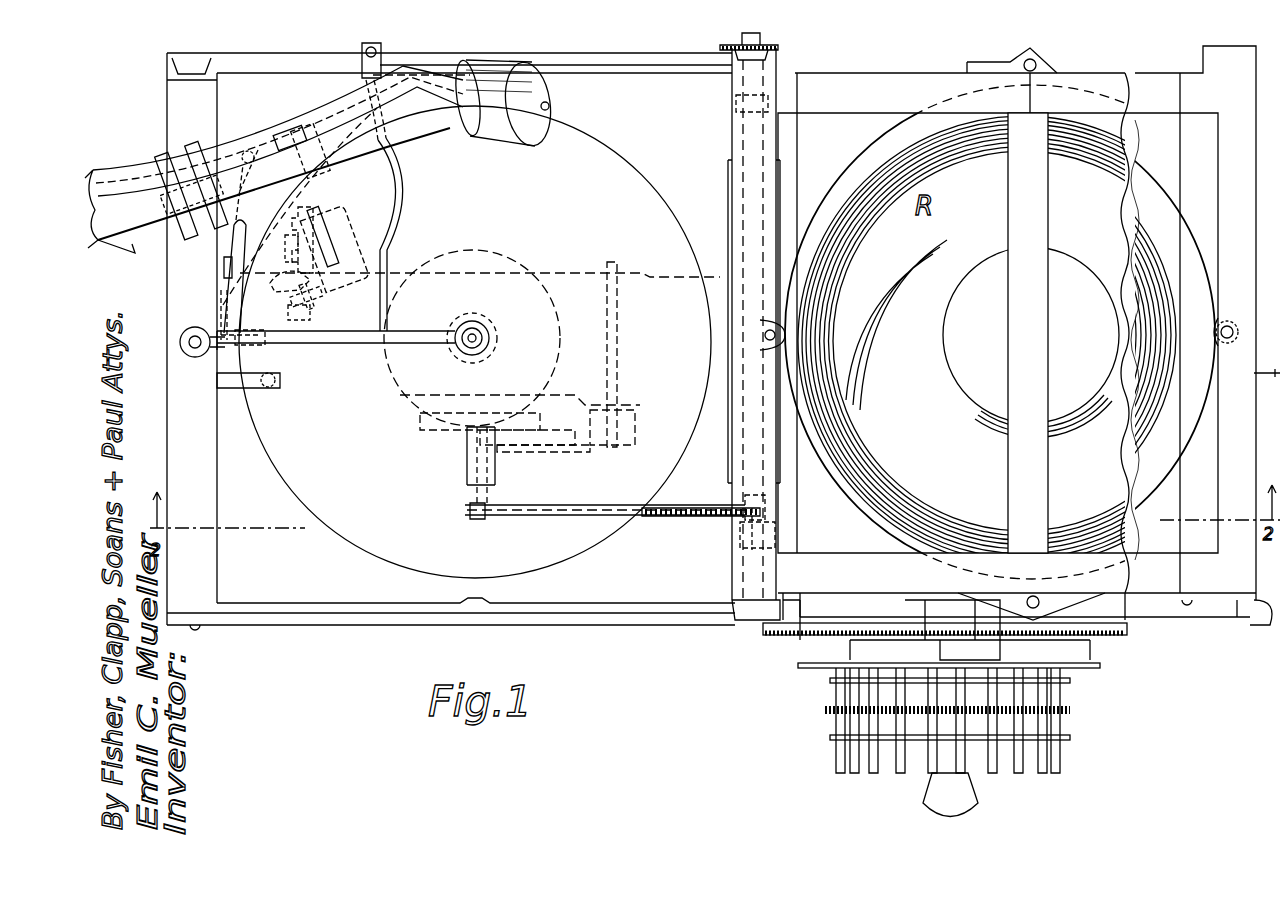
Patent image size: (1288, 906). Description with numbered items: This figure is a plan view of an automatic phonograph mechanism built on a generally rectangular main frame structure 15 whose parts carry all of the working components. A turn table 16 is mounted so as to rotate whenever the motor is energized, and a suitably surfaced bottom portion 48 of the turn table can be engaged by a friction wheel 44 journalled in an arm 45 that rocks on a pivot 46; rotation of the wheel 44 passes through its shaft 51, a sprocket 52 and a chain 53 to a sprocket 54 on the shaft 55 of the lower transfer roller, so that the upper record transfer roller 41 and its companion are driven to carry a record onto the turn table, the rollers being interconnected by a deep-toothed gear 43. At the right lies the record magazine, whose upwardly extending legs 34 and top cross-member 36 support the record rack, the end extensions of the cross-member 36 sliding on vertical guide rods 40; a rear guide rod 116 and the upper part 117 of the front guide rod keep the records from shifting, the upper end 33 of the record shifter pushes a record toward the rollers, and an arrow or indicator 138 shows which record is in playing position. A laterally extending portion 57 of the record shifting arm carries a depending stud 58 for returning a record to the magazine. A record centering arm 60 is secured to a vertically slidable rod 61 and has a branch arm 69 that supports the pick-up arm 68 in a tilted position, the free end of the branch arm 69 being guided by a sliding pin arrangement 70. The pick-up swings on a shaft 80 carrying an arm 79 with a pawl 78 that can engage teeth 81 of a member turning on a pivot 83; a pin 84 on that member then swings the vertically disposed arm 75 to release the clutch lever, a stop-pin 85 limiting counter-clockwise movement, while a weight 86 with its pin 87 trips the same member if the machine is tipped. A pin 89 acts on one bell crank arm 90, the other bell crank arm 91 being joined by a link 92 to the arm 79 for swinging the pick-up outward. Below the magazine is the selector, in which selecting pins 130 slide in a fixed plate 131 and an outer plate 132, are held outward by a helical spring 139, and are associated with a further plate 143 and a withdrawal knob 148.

The main frame structure 15 is at (648, 622).
The turn table 16 is at (590, 548).
The upper end of record shifter 33 is at (1264, 380).
The upwardly extending legs 34 is at (1000, 110).
The top cross-member 36 is at (1048, 400).
The guide rods 40 is at (1036, 60).
The upper record transfer roller 41 is at (730, 175).
The gear 43 is at (778, 48).
The wheel 44 is at (412, 428).
The arm 45 is at (535, 455).
The pivot 46 is at (612, 450).
The surfaced bottom portion of turn table 48 is at (398, 415).
The shaft of wheel 51 is at (465, 468).
The sprocket 52 is at (462, 520).
The chain 53 is at (668, 520).
The sprocket 54 is at (740, 522).
The shaft of lower record transfer roller 55 is at (742, 500).
The laterally extending portion 57 is at (255, 390).
The depending stud 58 is at (278, 385).
The record centering arm 60 is at (342, 338).
The rod 61 is at (185, 338).
The pick-up arm 68 is at (320, 110).
The branch arm 69 is at (395, 190).
The sliding pin arrangement 70 is at (360, 47).
The vertically disposed arm 75 is at (325, 300).
The pawl 78 is at (330, 160).
The arm 79 is at (252, 150).
The shaft 80 is at (160, 178).
The teeth 81 is at (298, 212).
The pivot 83 is at (285, 240).
The pin 84 is at (297, 318).
The stop-pin 85 is at (280, 284).
The weight 86 is at (362, 215).
The pin 87 is at (328, 210).
The pin 89 is at (250, 328).
The bell crank arm 90 is at (221, 330).
The bell crank arm 91 is at (222, 287).
The link 92 is at (248, 240).
The guide rod 116 is at (1230, 320).
The upper part of front guide rod 117 is at (778, 332).
The selecting pins 130 is at (836, 765).
The fixed plate 131 is at (1100, 666).
The plate 132 is at (1072, 738).
The arrow or indicator 138 is at (768, 636).
The helical spring 139 is at (1072, 712).
The plate 143 is at (1070, 681).
The knob 148 is at (978, 800).